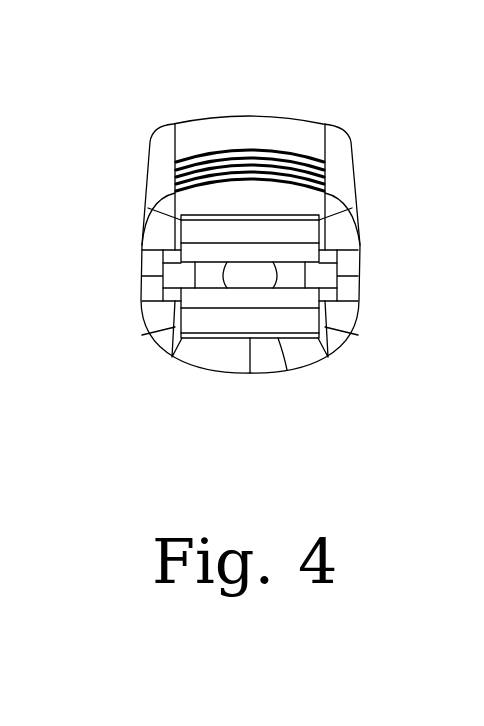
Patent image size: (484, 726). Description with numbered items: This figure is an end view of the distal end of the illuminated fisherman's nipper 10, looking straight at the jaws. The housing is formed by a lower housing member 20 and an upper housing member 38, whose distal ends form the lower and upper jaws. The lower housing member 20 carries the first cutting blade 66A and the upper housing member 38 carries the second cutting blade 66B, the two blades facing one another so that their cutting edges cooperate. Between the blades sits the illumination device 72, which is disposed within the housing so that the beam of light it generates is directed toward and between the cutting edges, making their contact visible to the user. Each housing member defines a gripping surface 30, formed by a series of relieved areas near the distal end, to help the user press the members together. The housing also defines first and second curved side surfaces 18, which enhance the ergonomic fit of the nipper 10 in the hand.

The nipper 10 is at (118, 107).
The upper housing member 38 is at (238, 115).
The gripping surface 30 is at (173, 168).
The second cutting blade 66B is at (267, 243).
The first cutting blade 66A is at (278, 347).
The side surfaces 18 is at (142, 276).
The illumination device 72 is at (223, 288).
The lower housing member 20 is at (225, 355).